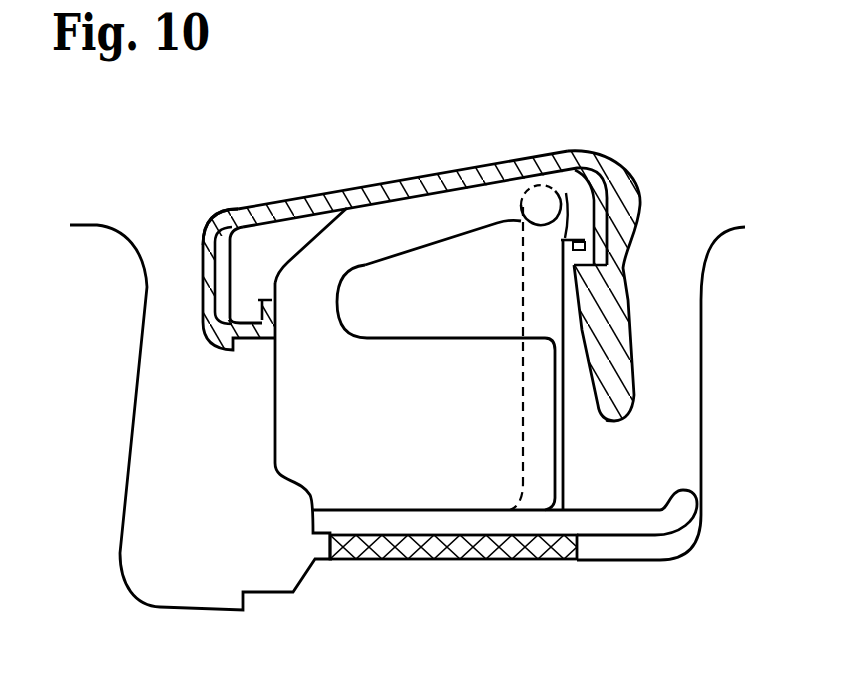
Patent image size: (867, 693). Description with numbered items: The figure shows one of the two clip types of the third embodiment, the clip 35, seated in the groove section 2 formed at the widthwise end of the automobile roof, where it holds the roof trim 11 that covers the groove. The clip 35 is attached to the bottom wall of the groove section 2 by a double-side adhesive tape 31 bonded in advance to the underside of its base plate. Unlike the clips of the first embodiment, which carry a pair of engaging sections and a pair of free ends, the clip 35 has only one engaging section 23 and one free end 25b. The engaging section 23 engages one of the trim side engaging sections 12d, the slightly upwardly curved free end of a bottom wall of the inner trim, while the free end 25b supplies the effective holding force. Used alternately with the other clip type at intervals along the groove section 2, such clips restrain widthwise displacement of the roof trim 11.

The groove section 2 is at (168, 280).
The roof trim 11 is at (503, 165).
The trim side engaging section 12d is at (623, 243).
The engaging section 23 is at (575, 165).
The free end 25b is at (437, 213).
The double-side adhesive tape 31 is at (436, 548).
The clip 35 is at (297, 249).